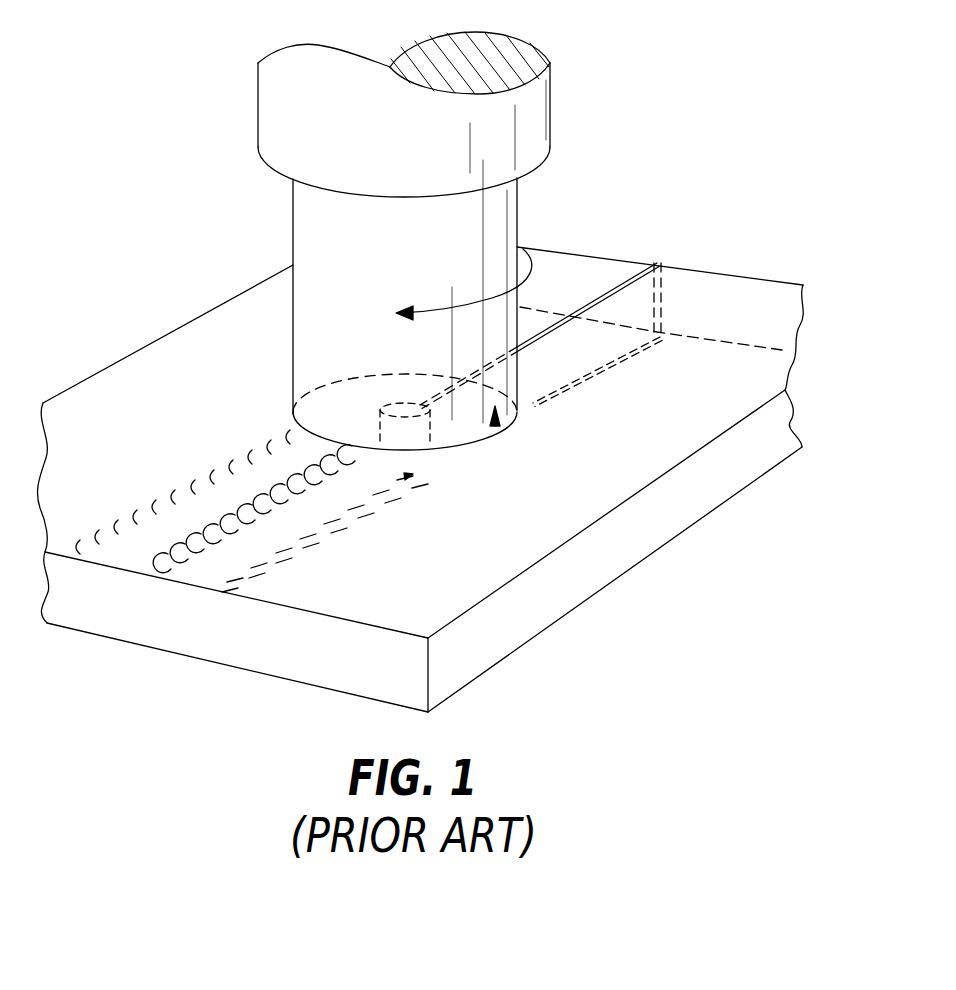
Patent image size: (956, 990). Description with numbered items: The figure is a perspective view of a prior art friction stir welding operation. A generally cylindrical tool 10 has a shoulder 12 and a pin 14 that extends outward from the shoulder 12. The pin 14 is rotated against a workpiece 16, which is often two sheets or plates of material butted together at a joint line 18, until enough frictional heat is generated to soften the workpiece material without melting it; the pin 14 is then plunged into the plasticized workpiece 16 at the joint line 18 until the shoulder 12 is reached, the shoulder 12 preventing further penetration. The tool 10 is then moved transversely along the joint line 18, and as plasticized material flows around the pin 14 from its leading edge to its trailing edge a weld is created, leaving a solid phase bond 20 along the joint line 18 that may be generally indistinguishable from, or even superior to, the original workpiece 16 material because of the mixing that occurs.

The tool 10 is at (520, 218).
The shoulder 12 is at (503, 429).
The pin 14 is at (455, 445).
The workpiece 16 is at (730, 297).
The joint line 18 is at (657, 262).
The solid phase bond 20 is at (301, 441).